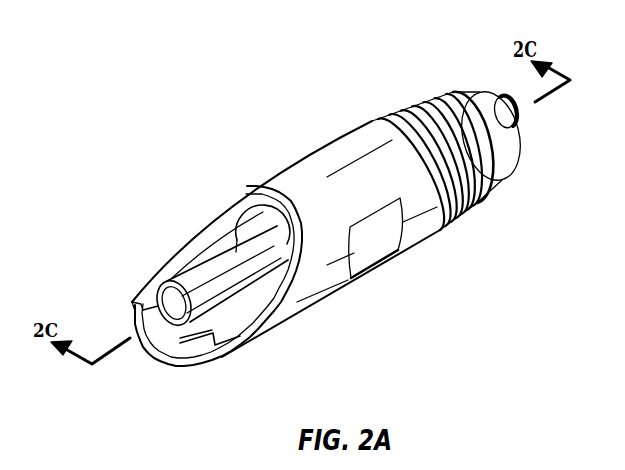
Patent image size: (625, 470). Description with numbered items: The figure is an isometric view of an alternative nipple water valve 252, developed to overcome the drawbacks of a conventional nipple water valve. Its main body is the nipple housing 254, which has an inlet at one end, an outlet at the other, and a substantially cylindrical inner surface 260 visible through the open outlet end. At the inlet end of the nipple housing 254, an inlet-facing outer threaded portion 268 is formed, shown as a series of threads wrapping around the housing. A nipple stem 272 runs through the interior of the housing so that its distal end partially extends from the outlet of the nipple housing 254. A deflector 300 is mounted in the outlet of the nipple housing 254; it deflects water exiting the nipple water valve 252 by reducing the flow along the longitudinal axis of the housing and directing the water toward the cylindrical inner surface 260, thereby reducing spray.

The alternative nipple water valve 252 is at (198, 108).
The nipple housing 254 is at (323, 168).
The cylindrical inner surface 260 is at (167, 348).
The inlet-facing outer threaded portion 268 is at (456, 181).
The nipple stem 272 is at (217, 287).
The deflector 300 is at (247, 228).